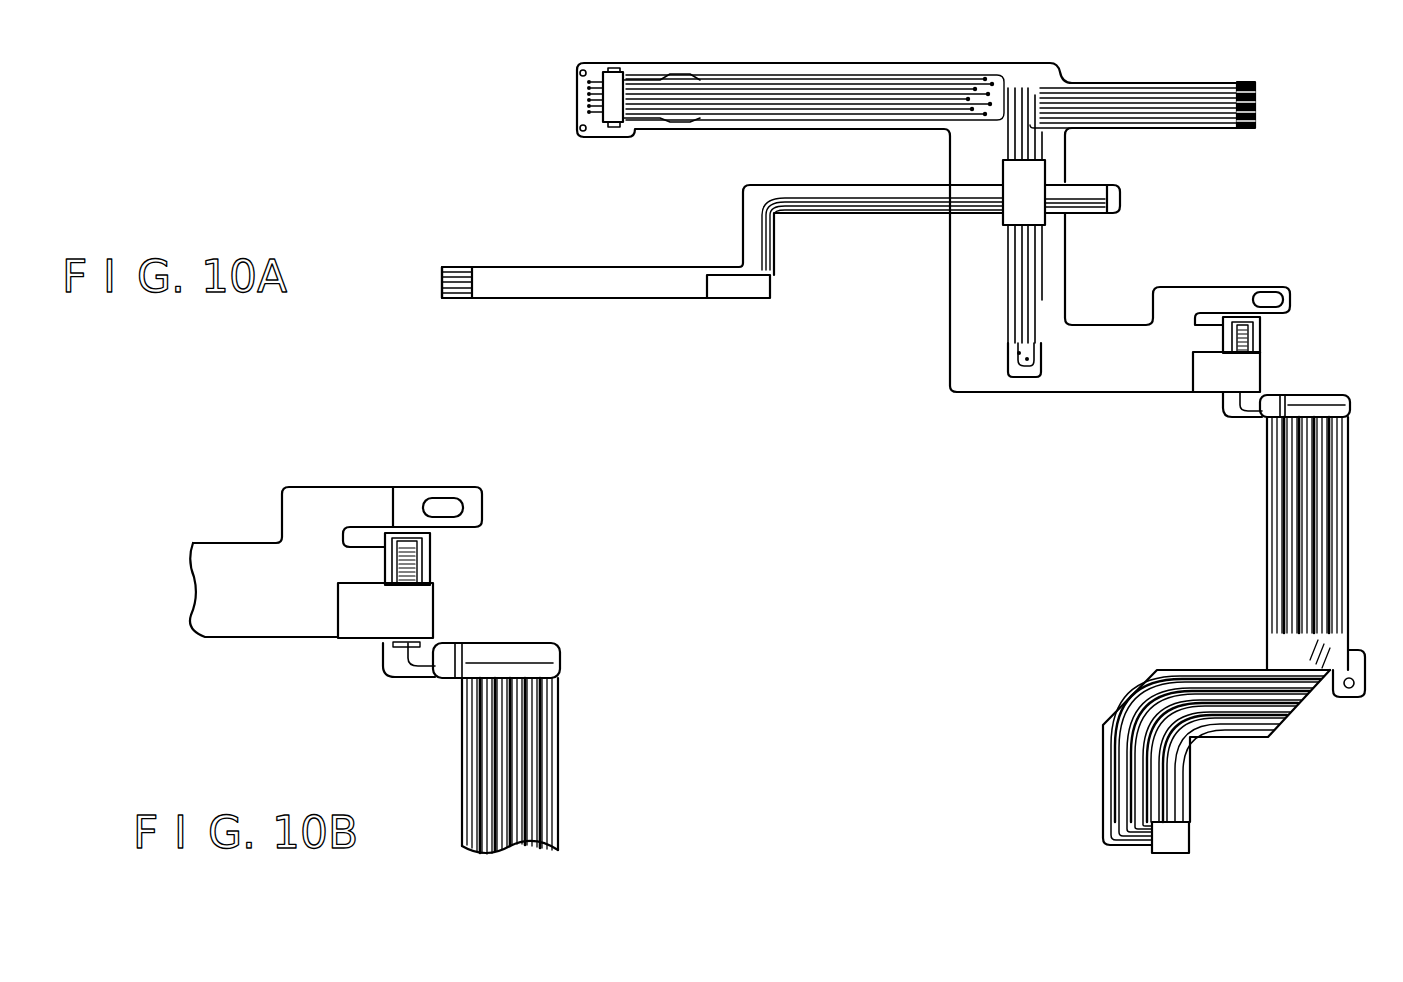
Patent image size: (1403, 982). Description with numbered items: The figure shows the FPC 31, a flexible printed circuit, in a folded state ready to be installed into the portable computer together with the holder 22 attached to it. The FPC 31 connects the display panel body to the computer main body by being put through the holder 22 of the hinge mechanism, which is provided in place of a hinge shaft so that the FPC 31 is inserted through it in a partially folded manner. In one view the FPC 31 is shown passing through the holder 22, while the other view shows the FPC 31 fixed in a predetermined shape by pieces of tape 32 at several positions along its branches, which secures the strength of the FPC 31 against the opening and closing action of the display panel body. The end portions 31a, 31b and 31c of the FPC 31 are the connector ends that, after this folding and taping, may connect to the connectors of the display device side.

In FIG. 10A, the holder 22 is at (1302, 393).
In FIG. 10B, the holder 22 is at (502, 642).
In FIG. 10A, the FPC 31 is at (993, 428).
In FIG. 10A, the connector pad of flexible printed circuit board 31a is at (578, 66).
In FIG. 10A, the arm of flexible printed circuit board 31b is at (462, 300).
In FIG. 10A, the end portion of flexible printed circuit board 31c is at (1258, 105).
In FIG. 10A, the tape 32 is at (1040, 172).